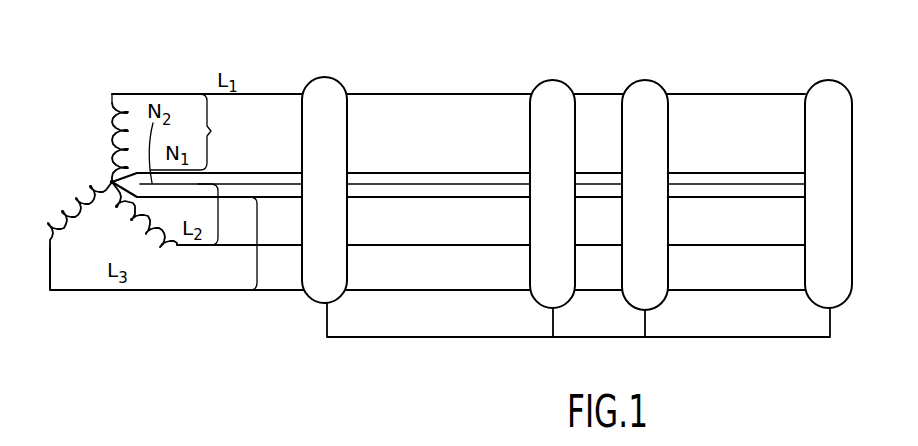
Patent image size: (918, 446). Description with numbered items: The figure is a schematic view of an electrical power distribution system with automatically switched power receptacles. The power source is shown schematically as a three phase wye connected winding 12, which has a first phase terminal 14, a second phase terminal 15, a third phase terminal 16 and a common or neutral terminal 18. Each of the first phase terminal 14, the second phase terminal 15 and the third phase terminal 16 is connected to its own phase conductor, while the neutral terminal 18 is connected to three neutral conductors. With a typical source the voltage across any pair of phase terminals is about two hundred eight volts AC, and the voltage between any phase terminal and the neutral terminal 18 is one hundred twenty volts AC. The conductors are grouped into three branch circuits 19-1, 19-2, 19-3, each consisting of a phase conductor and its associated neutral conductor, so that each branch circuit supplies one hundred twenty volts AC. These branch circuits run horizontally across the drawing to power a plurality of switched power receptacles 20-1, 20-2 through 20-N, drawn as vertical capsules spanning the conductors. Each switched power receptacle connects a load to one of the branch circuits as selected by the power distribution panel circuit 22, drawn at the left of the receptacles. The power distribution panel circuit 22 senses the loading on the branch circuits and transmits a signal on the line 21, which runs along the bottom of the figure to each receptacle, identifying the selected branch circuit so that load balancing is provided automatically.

The three phase wye connected winding 12 is at (129, 162).
The first phase terminal 14 is at (147, 94).
The second phase terminal 15 is at (190, 245).
The third phase terminal 16 is at (50, 270).
The neutral terminal 18 is at (112, 183).
The first branch circuit 19-1 is at (206, 132).
The second branch circuit 19-2 is at (218, 213).
The third branch circuit 19-3 is at (257, 232).
The first switched power receptacle 20-1 is at (553, 92).
The second switched power receptacle 20-2 is at (650, 93).
The Nth switched power receptacle 20-N is at (828, 88).
The line 21 is at (427, 337).
The power distribution panel circuit 22 is at (328, 92).